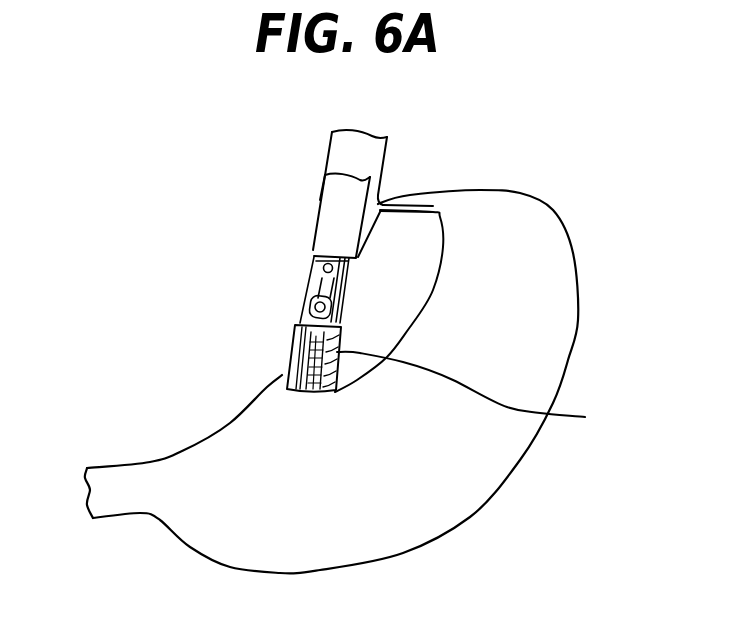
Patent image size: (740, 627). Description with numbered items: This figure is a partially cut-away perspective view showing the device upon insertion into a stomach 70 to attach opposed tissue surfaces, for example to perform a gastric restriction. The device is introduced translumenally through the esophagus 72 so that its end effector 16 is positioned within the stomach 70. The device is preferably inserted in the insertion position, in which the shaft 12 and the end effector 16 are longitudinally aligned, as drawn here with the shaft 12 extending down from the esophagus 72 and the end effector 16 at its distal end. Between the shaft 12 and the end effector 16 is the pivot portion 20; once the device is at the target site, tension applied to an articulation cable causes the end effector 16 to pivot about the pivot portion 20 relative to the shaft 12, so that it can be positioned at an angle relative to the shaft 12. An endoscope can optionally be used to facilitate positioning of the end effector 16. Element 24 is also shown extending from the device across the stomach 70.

The shaft 12 is at (330, 228).
The end effector 16 is at (280, 372).
The pivot portion 20 is at (298, 260).
The tether 24 is at (479, 392).
The stomach 70 is at (458, 456).
The esophagus 72 is at (400, 160).